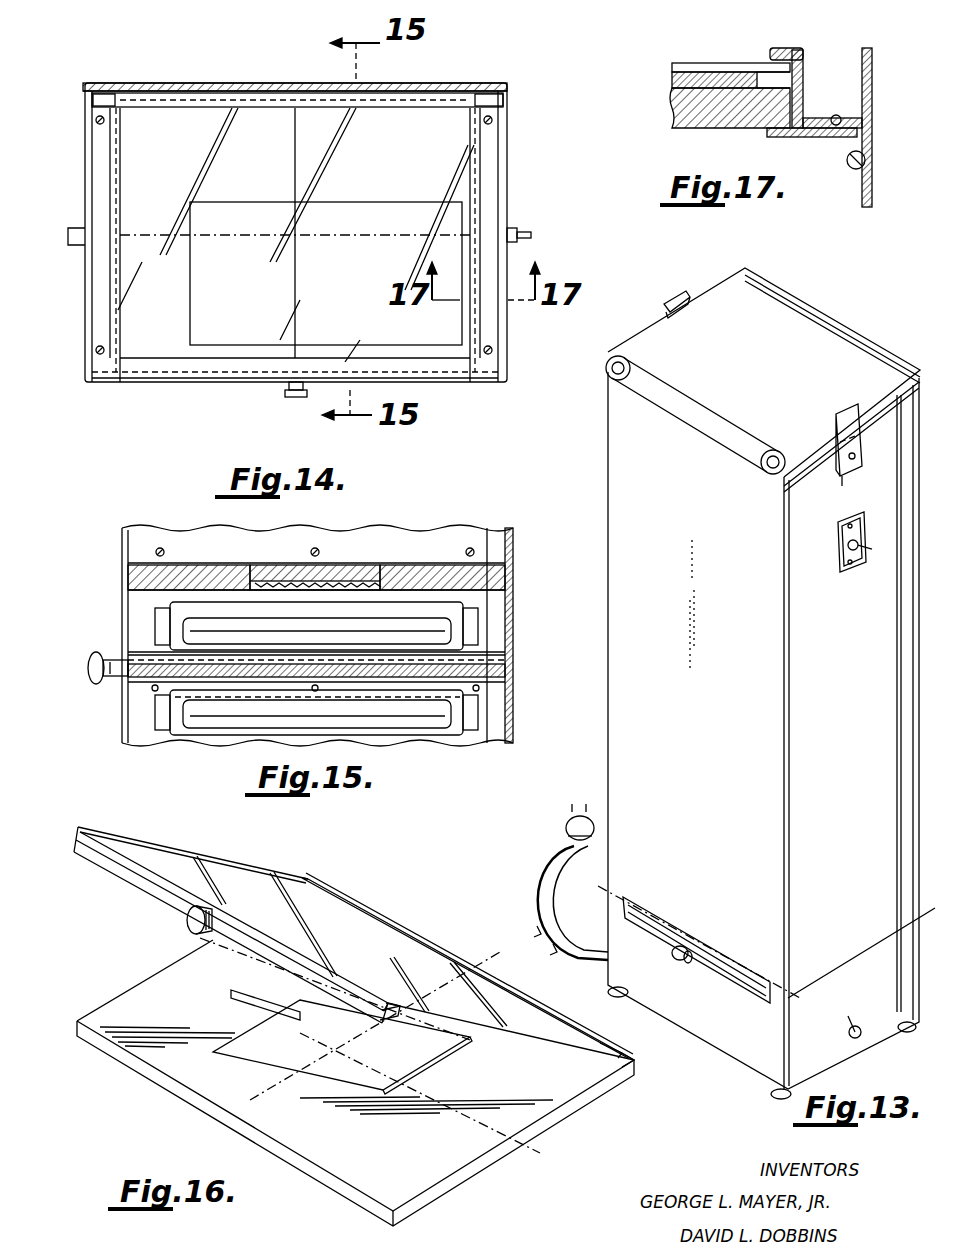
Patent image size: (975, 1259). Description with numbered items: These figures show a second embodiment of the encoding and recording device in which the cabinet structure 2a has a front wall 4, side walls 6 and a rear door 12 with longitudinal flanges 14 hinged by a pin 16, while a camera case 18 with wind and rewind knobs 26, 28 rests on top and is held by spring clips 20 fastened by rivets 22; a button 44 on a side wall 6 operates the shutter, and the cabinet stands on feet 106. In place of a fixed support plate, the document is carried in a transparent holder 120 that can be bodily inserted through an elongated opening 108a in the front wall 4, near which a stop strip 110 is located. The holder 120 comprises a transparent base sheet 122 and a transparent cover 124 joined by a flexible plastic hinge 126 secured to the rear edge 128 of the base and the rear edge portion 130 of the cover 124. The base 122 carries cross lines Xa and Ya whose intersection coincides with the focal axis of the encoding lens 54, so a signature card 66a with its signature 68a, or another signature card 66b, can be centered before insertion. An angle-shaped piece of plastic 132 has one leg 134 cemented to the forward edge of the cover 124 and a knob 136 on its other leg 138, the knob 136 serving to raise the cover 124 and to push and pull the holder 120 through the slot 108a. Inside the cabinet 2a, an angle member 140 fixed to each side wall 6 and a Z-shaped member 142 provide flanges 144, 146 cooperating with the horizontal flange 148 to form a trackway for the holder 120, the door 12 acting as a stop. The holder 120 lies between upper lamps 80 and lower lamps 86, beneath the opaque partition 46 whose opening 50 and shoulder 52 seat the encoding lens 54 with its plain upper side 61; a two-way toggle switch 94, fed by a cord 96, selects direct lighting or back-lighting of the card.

In FIG. 14, the cabinet structure 2a is at (506, 140).
In FIG. 15, the cabinet structure 2a is at (425, 526).
In FIG. 17, the cabinet structure 2a is at (874, 60).
In FIG. 13, the cabinet structure 2a is at (606, 456).
In FIG. 14, the front wall 4 is at (490, 384).
In FIG. 15, the front wall 4 is at (122, 540).
In FIG. 13, the front wall 4 is at (612, 513).
In FIG. 14, the side wall 6 is at (84, 98).
In FIG. 17, the side wall 6 is at (874, 84).
In FIG. 13, the side wall 6 is at (790, 745).
In FIG. 14, the rear door 12 is at (143, 84).
In FIG. 15, the rear door 12 is at (512, 604).
In FIG. 13, the rear door 12 is at (918, 393).
In FIG. 13, the longitudinal flanges 14 is at (902, 734).
In FIG. 14, the pin 16 is at (484, 92).
In FIG. 13, the pin 16 is at (903, 982).
In FIG. 13, the camera case 18 is at (800, 312).
In FIG. 13, the spring clips 20 is at (672, 300).
In FIG. 13, the rivets 22 is at (852, 474).
In FIG. 13, the wind knob 26 is at (640, 352).
In FIG. 13, the rewind knob 28 is at (770, 450).
In FIG. 13, the button 44 is at (866, 556).
In FIG. 15, the opaque partition 46 is at (506, 576).
In FIG. 15, the opening 50 is at (362, 570).
In FIG. 15, the shoulder 52 is at (250, 573).
In FIG. 15, the encoding lens 54 is at (352, 578).
In FIG. 15, the upper side of the lens 61 is at (260, 566).
In FIG. 17, the signature card 66a is at (668, 78).
In FIG. 16, the signature card 66a is at (228, 992).
In FIG. 14, the signature card 66b is at (350, 204).
In FIG. 16, the signature 68a is at (290, 1040).
In FIG. 15, the lamps 80 is at (395, 626).
In FIG. 15, the lamps 86 is at (200, 714).
In FIG. 14, the toggle switch 94 is at (513, 226).
In FIG. 13, the toggle switch 94 is at (848, 1034).
In FIG. 14, the cord 96 is at (66, 248).
In FIG. 13, the cord 96 is at (537, 864).
In FIG. 13, the foot 106 is at (606, 988).
In FIG. 14, the elongated opening 108a is at (116, 384).
In FIG. 15, the elongated opening 108a is at (124, 698).
In FIG. 13, the elongated opening 108a is at (656, 904).
In FIG. 13, the stop strip 110 is at (732, 972).
In FIG. 14, the transparent holder 120 is at (170, 384).
In FIG. 15, the transparent holder 120 is at (122, 672).
In FIG. 17, the transparent holder 120 is at (668, 100).
In FIG. 16, the transparent holder 120 is at (358, 888).
In FIG. 15, the transparent base sheet 122 is at (352, 673).
In FIG. 17, the transparent base sheet 122 is at (688, 126).
In FIG. 16, the transparent base sheet 122 is at (535, 1128).
In FIG. 14, the transparent cover 124 is at (436, 355).
In FIG. 15, the transparent cover 124 is at (250, 656).
In FIG. 17, the transparent cover 124 is at (706, 70).
In FIG. 16, the transparent cover 124 is at (200, 858).
In FIG. 15, the flexible plastic hinge 126 is at (500, 654).
In FIG. 16, the flexible plastic hinge 126 is at (402, 928).
In FIG. 16, the rear edge 128 is at (634, 1078).
In FIG. 16, the rear edge portion 130 is at (608, 1056).
In FIG. 15, the angle-shaped piece of plastic 132 is at (124, 646).
In FIG. 16, the angle-shaped piece of plastic 132 is at (108, 860).
In FIG. 16, the leg 134 is at (344, 974).
In FIG. 14, the knob 136 is at (286, 398).
In FIG. 15, the knob 136 is at (94, 660).
In FIG. 13, the knob 136 is at (674, 958).
In FIG. 16, the knob 136 is at (186, 916).
In FIG. 16, the leg 138 is at (386, 1020).
In FIG. 15, the angle member 140 is at (480, 688).
In FIG. 17, the angle member 140 is at (854, 170).
In FIG. 14, the Z-shaped member 142 is at (104, 141).
In FIG. 17, the Z-shaped member 142 is at (806, 54).
In FIG. 14, the flange 144 is at (116, 170).
In FIG. 17, the flange 144 is at (790, 46).
In FIG. 14, the flange 146 is at (470, 158).
In FIG. 17, the flange 146 is at (805, 96).
In FIG. 15, the horizontal flange 148 is at (512, 676).
In FIG. 17, the horizontal flange 148 is at (786, 136).
In FIG. 14, the cross line Xa is at (296, 153).
In FIG. 16, the cross line Xa is at (270, 1093).
In FIG. 14, the cross line Ya is at (158, 234).
In FIG. 16, the cross line Ya is at (468, 1120).